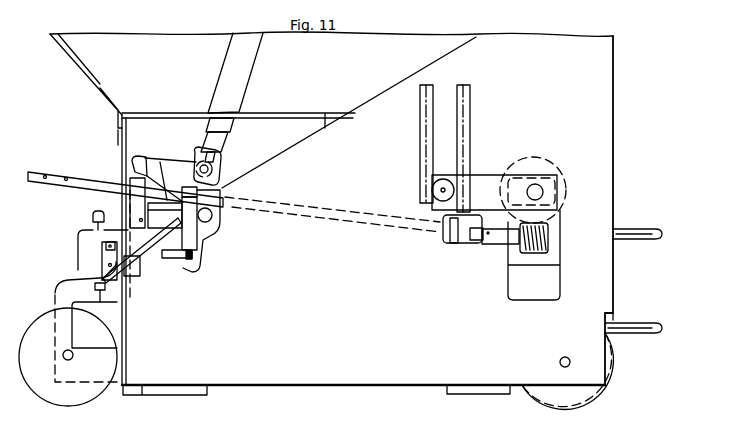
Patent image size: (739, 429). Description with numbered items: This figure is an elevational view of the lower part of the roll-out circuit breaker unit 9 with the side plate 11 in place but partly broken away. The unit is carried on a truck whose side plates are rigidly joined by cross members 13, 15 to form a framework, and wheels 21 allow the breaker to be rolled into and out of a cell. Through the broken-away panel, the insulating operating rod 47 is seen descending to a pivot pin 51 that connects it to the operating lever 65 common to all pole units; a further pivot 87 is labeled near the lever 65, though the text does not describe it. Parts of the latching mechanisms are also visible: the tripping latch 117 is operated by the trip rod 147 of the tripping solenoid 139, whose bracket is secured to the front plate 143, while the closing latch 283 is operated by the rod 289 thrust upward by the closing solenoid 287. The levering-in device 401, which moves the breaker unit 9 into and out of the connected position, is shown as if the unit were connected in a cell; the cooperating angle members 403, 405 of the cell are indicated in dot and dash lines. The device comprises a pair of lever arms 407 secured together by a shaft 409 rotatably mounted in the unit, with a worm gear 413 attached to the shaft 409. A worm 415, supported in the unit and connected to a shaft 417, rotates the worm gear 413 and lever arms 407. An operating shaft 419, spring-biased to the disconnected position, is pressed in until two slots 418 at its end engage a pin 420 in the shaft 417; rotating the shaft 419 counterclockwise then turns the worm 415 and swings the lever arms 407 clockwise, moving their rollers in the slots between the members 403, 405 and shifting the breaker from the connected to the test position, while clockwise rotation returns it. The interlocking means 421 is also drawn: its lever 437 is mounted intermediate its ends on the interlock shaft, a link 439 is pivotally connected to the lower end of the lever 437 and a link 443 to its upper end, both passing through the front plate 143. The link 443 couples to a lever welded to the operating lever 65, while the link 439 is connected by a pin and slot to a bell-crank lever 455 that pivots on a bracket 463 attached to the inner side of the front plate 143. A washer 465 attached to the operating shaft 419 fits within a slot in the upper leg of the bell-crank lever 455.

The circuit breaker unit 9 is at (356, 208).
The side plate 11 is at (613, 132).
The cross member 13 is at (207, 392).
The cross member 15 is at (447, 394).
The wheel 21 is at (47, 392).
The insulating operating rod 47 is at (255, 62).
The pivot pin 51 is at (213, 167).
The operating lever 65 is at (160, 162).
The pivot 87 is at (213, 218).
The tripping latch 117 is at (100, 212).
The tripping solenoid 139 is at (63, 250).
The front plate 143 is at (120, 146).
The trip rod 147 is at (93, 227).
The closing latch 283 is at (55, 284).
The closing solenoid 287 is at (102, 336).
The rod 289 is at (100, 291).
The levering-in device 401 is at (489, 195).
The angle member 403 is at (420, 105).
The angle member 405 is at (470, 97).
The lever arm 407 is at (488, 175).
The shaft 409 is at (545, 192).
The worm gear 413 is at (565, 210).
The worm 415 is at (548, 243).
The shaft 417 is at (504, 242).
The slot 418 is at (468, 245).
The operating shaft 419 is at (280, 213).
The pin 420 is at (483, 247).
The interlocking means 421 is at (183, 293).
The lever 437 is at (102, 262).
The link 439 is at (128, 265).
The link 443 is at (186, 266).
The bell-crank lever 455 is at (168, 212).
The bracket 463 is at (128, 210).
The washer 465 is at (147, 173).